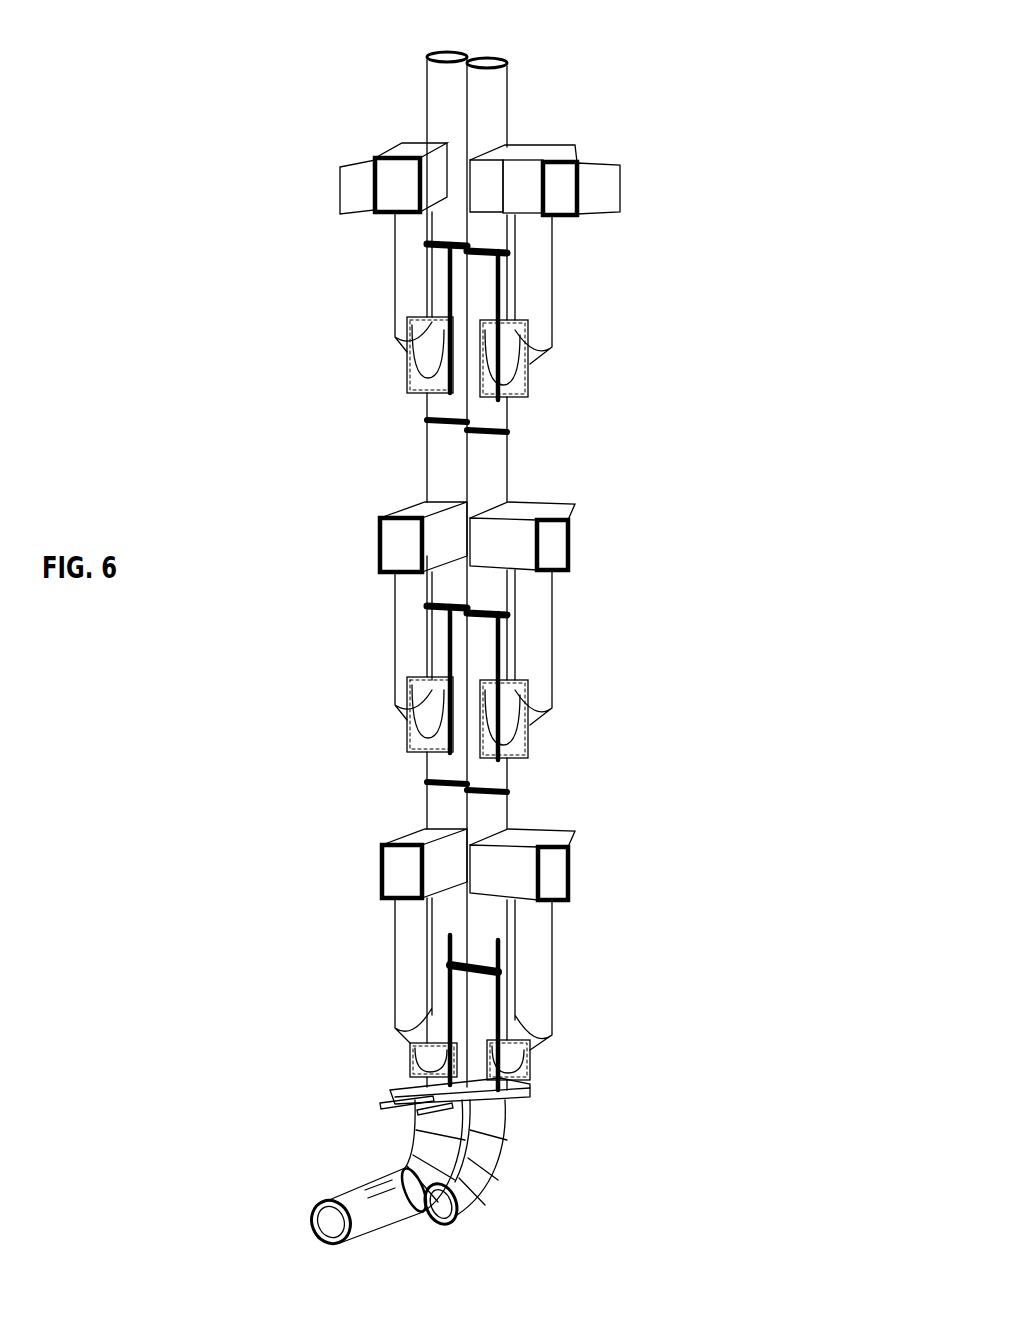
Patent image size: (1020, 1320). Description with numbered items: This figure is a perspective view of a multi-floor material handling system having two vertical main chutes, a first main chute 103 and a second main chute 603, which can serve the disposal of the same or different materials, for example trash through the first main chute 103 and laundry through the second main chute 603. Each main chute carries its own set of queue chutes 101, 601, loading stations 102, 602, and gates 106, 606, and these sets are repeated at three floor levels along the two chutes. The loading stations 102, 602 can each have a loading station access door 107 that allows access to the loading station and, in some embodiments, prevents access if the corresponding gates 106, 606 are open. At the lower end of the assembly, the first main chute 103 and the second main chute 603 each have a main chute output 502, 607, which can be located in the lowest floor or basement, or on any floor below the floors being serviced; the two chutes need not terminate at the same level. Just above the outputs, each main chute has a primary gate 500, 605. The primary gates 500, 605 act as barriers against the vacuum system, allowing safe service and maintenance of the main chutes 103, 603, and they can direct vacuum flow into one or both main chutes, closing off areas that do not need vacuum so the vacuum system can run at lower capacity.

The queue chute 101 is at (413, 283).
The loading station 102 is at (390, 153).
The first main chute 103 is at (440, 107).
The gate 106 is at (410, 382).
The loading station access door 107 is at (357, 185).
The primary gate 500 is at (405, 1092).
The main chute output 502 is at (313, 1202).
The queue chute 601 is at (535, 283).
The loading station 602 is at (560, 155).
The second main chute 603 is at (500, 107).
The primary gate 605 is at (510, 1100).
The gate 606 is at (533, 382).
The main chute output 607 is at (456, 1202).